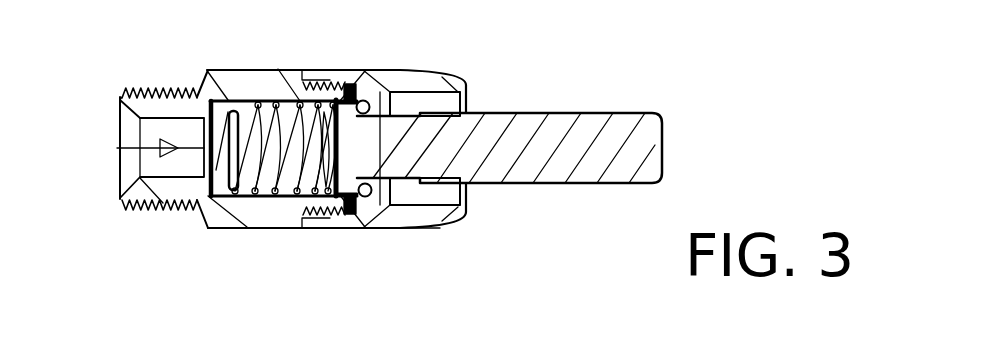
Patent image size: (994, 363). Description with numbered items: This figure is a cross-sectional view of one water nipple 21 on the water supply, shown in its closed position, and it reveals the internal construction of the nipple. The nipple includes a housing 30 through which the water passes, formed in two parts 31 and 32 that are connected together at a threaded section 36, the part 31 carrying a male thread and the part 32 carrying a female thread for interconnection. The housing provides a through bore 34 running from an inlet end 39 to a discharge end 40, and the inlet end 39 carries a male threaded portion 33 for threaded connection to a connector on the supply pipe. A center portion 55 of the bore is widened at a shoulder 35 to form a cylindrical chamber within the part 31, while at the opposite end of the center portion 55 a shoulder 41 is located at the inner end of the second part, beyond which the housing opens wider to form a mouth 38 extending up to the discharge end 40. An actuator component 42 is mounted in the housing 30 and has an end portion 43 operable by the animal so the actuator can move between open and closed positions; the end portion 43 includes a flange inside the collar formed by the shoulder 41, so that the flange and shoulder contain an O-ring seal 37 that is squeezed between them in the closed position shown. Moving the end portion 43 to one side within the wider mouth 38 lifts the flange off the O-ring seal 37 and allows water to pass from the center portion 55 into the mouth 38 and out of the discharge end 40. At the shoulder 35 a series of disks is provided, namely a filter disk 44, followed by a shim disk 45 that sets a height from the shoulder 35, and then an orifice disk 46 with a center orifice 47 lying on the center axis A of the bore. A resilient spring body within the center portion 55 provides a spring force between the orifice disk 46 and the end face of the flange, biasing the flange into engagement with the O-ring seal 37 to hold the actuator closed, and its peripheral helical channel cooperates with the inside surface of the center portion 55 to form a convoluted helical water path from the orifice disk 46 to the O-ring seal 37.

The housing 30 is at (430, 63).
The housing part 31 is at (228, 220).
The housing part 32 is at (420, 230).
The male threaded portion 33 is at (148, 210).
The through bore 34 is at (160, 170).
The shoulder 35 is at (207, 107).
The threaded section 36 is at (362, 198).
The O-ring seal 37 is at (364, 98).
The mouth 38 is at (470, 197).
The inlet end 39 is at (122, 200).
The discharge end 40 is at (468, 213).
The shoulder 41 is at (383, 206).
The actuator component 42 is at (611, 178).
The end portion 43 is at (580, 122).
The filter disk 44 is at (213, 138).
The shim disk 45 is at (221, 150).
The orifice disk 46 is at (233, 143).
The center orifice 47 is at (237, 112).
The center portion 55 is at (261, 200).
The water nipple 21 is at (417, 262).
The center axis A is at (143, 145).